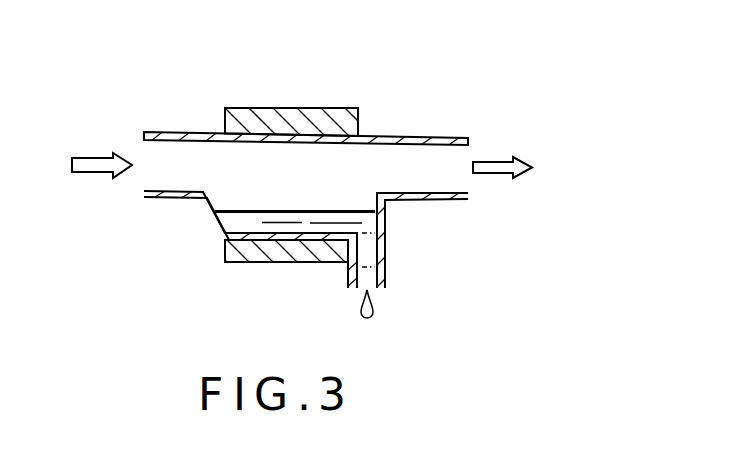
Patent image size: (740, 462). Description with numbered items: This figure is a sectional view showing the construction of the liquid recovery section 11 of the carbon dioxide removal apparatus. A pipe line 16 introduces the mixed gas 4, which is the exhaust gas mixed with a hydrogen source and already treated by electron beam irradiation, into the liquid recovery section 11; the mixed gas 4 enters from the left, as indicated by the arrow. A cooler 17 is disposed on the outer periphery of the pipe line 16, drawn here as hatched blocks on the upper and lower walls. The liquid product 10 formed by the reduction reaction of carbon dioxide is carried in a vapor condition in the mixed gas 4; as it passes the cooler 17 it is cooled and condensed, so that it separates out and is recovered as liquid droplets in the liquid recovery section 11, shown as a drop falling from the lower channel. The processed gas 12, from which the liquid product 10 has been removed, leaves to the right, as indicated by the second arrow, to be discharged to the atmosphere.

The mixed gas 4 is at (92, 162).
The liquid product 10 is at (300, 224).
The liquid recovery section 11 is at (197, 124).
The processed gas 12 is at (500, 163).
The pipe line 16 is at (160, 133).
The cooler 17 is at (359, 120).